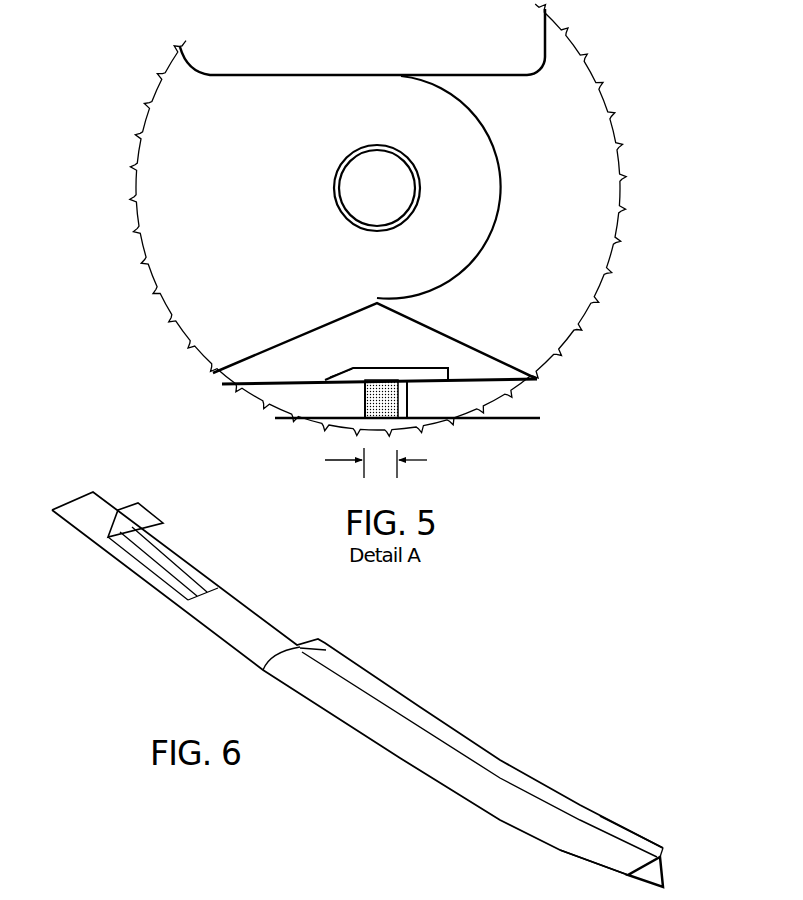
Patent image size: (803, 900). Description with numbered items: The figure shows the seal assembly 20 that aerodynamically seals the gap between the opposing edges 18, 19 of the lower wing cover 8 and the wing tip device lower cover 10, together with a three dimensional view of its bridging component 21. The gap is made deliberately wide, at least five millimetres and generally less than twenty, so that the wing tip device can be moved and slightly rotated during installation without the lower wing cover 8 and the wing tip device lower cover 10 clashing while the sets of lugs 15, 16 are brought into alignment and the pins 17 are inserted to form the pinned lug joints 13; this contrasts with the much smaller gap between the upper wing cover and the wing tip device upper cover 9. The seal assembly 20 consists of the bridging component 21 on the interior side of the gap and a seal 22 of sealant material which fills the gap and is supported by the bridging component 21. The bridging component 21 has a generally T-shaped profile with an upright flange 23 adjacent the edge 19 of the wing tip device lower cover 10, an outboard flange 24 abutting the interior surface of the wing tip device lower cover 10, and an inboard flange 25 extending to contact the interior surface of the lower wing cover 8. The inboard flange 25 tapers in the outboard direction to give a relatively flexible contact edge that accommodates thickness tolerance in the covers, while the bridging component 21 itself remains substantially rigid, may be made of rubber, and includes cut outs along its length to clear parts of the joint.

In FIG. 5, the lower wing cover 8 is at (273, 405).
In FIG. 5, the wing tip device upper cover 9 is at (385, 462).
In FIG. 5, the wing tip device lower cover 10 is at (508, 395).
In FIG. 5, the pinned lug joint 13 is at (260, 203).
In FIG. 5, the set of lugs 15 is at (232, 168).
In FIG. 5, the set of lugs 16 is at (592, 203).
In FIG. 5, the pin 17 is at (386, 178).
In FIG. 5, the edge of lower wing cover 18 is at (358, 402).
In FIG. 5, the edge of wing tip device lower cover 19 is at (418, 400).
In FIG. 5, the seal assembly 20 is at (472, 365).
In FIG. 5, the bridging component 21 is at (390, 364).
In FIG. 6, the bridging component 21 is at (357, 683).
In FIG. 5, the seal 22 is at (353, 375).
In FIG. 6, the seal 22 is at (163, 551).
In FIG. 6, the upright flange 23 is at (672, 882).
In FIG. 6, the outboard flange 24 is at (637, 832).
In FIG. 6, the inboard flange 25 is at (618, 858).